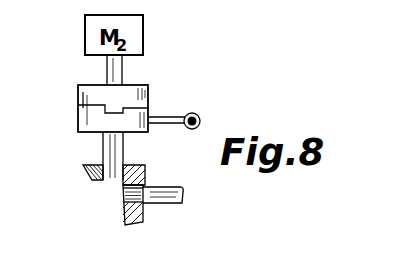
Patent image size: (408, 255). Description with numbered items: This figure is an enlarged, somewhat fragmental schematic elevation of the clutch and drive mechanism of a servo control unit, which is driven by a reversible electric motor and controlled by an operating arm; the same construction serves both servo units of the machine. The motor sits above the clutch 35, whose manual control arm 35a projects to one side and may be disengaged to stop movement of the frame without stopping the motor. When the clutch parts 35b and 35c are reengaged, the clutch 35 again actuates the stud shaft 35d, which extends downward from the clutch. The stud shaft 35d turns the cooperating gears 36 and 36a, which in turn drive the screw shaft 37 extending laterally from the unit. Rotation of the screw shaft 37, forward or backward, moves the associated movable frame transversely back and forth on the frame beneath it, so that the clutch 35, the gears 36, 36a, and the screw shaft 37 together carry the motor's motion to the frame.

The clutch 35 is at (78, 86).
The manual control arm 35a is at (200, 118).
The clutch part 35b is at (85, 100).
The clutch part 35c is at (150, 112).
The stud shaft 35d is at (103, 149).
The gear 36 is at (90, 177).
The gear 36a is at (135, 217).
The screw shaft 37 is at (172, 204).